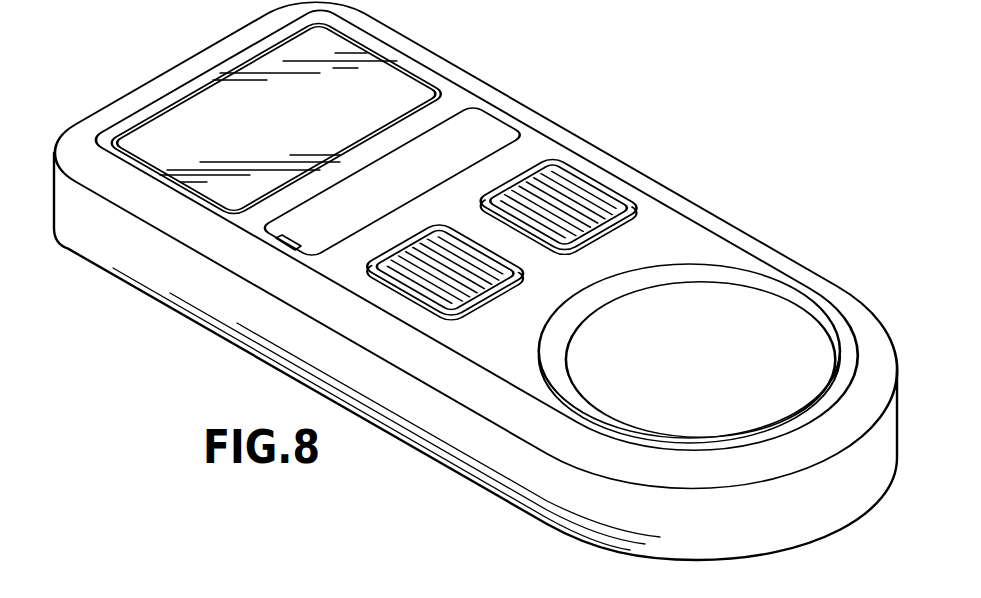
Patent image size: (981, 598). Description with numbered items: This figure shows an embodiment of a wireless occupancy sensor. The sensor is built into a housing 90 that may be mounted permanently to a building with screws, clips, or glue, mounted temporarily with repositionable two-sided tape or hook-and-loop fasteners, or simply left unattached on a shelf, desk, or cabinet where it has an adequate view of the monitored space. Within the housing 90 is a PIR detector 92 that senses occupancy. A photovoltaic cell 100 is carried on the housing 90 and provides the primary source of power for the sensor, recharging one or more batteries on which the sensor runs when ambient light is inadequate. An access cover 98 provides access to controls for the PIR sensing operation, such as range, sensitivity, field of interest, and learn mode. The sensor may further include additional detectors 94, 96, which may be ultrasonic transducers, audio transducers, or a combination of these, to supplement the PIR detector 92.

The housing 90 is at (512, 97).
The PIR detector 92 is at (680, 353).
The additional detector 94 is at (503, 192).
The additional detector 96 is at (383, 252).
The access cover 98 is at (413, 190).
The photovoltaic cell 100 is at (307, 127).